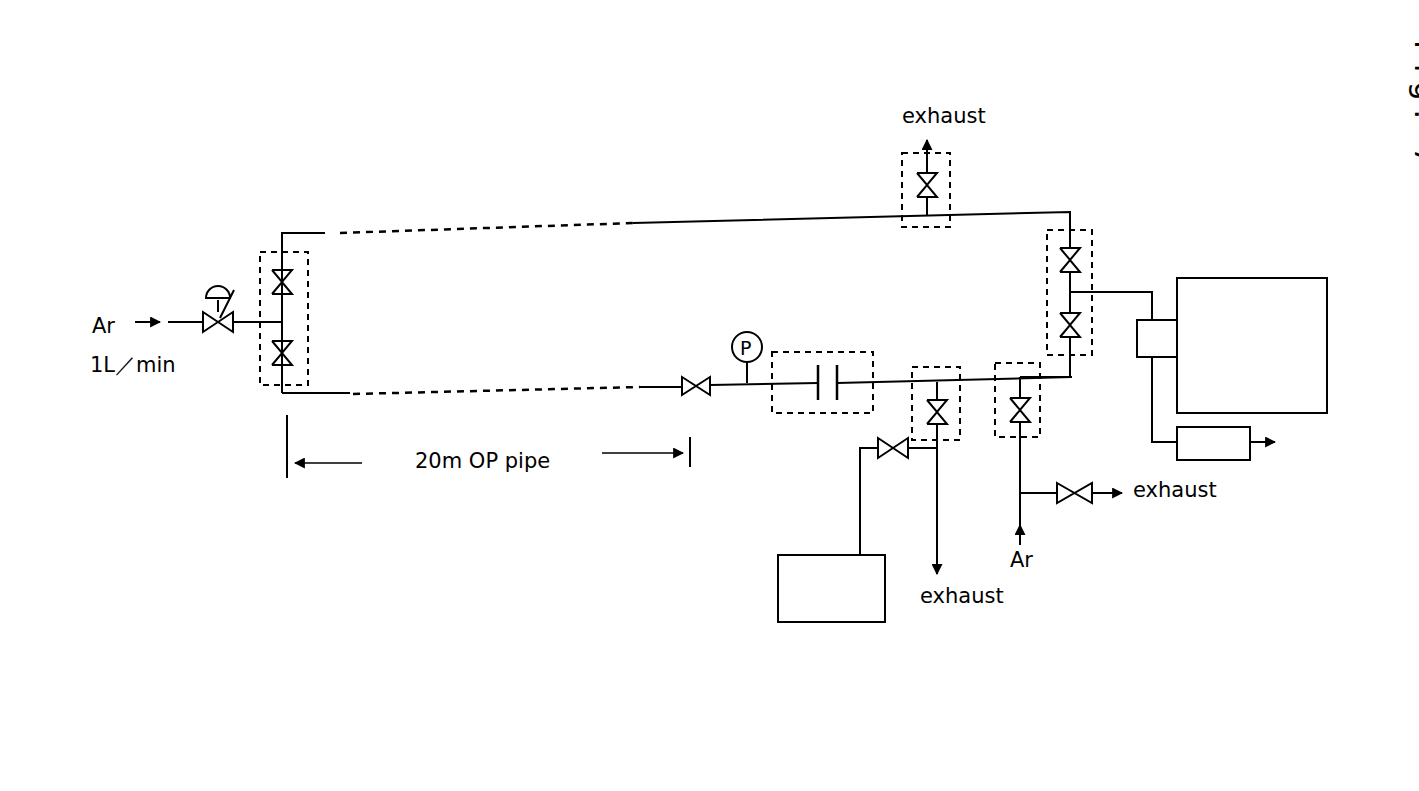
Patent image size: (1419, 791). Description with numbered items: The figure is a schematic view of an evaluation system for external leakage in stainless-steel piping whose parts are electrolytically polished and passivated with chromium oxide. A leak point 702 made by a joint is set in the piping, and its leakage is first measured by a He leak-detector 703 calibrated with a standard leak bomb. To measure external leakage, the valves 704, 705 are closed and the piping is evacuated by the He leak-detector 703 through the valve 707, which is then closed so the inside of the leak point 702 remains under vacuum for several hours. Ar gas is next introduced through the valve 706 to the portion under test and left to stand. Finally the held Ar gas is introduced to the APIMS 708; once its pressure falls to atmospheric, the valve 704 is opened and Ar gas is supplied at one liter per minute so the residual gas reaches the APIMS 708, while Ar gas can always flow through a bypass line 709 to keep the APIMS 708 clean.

The leak point 702 is at (822, 404).
The He leak-detector 703 is at (848, 613).
The valve 704 is at (312, 318).
The valve 705 is at (1072, 303).
The valve 706 is at (1058, 454).
The valve 707 is at (936, 453).
The APIMS 708 is at (1200, 285).
The bypass line 709 is at (655, 223).